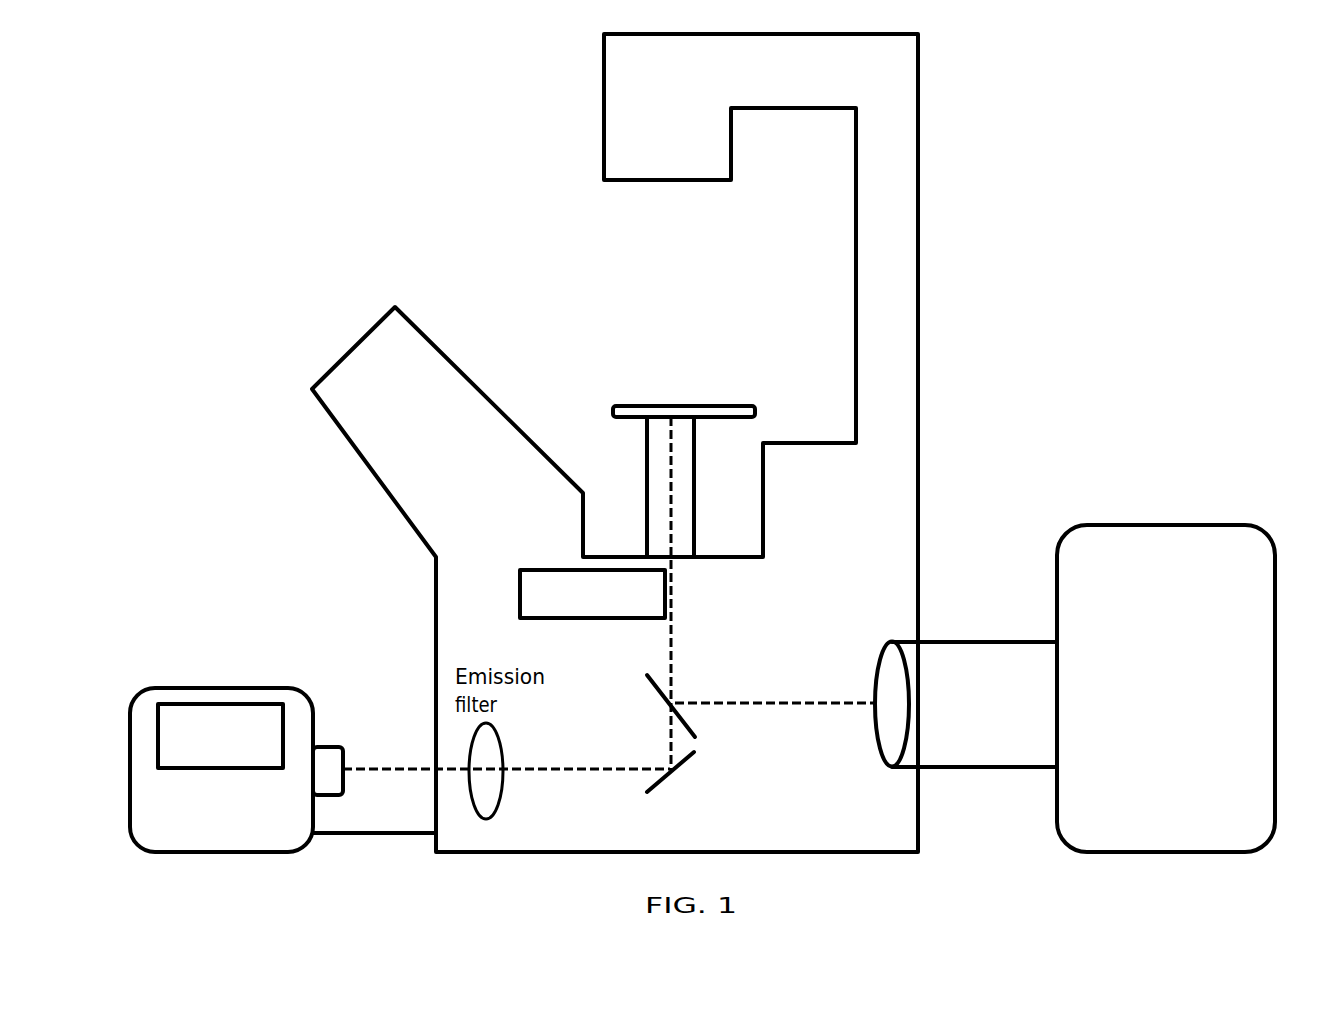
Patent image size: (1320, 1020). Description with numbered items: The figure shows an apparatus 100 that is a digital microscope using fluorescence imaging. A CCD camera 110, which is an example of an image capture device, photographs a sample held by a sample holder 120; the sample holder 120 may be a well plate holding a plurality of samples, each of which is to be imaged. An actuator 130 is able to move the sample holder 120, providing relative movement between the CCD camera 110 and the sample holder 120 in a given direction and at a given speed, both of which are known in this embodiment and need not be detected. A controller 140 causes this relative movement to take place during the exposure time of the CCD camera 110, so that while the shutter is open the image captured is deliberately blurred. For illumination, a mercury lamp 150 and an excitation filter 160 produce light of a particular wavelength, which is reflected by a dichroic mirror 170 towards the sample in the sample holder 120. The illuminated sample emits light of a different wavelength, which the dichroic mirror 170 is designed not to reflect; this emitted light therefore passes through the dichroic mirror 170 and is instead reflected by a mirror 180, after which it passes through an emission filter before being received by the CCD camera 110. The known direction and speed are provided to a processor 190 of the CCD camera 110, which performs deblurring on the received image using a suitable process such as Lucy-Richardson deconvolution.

The apparatus 100 is at (373, 155).
The CCD camera 110 is at (277, 688).
The sample holder 120 is at (613, 410).
The actuator 130 is at (683, 478).
The controller 140 is at (520, 596).
The mercury lamp 150 is at (1117, 553).
The excitation filter 160 is at (952, 748).
The dichroic mirror 170 is at (675, 702).
The mirror 180 is at (668, 773).
The processor 190 is at (175, 702).